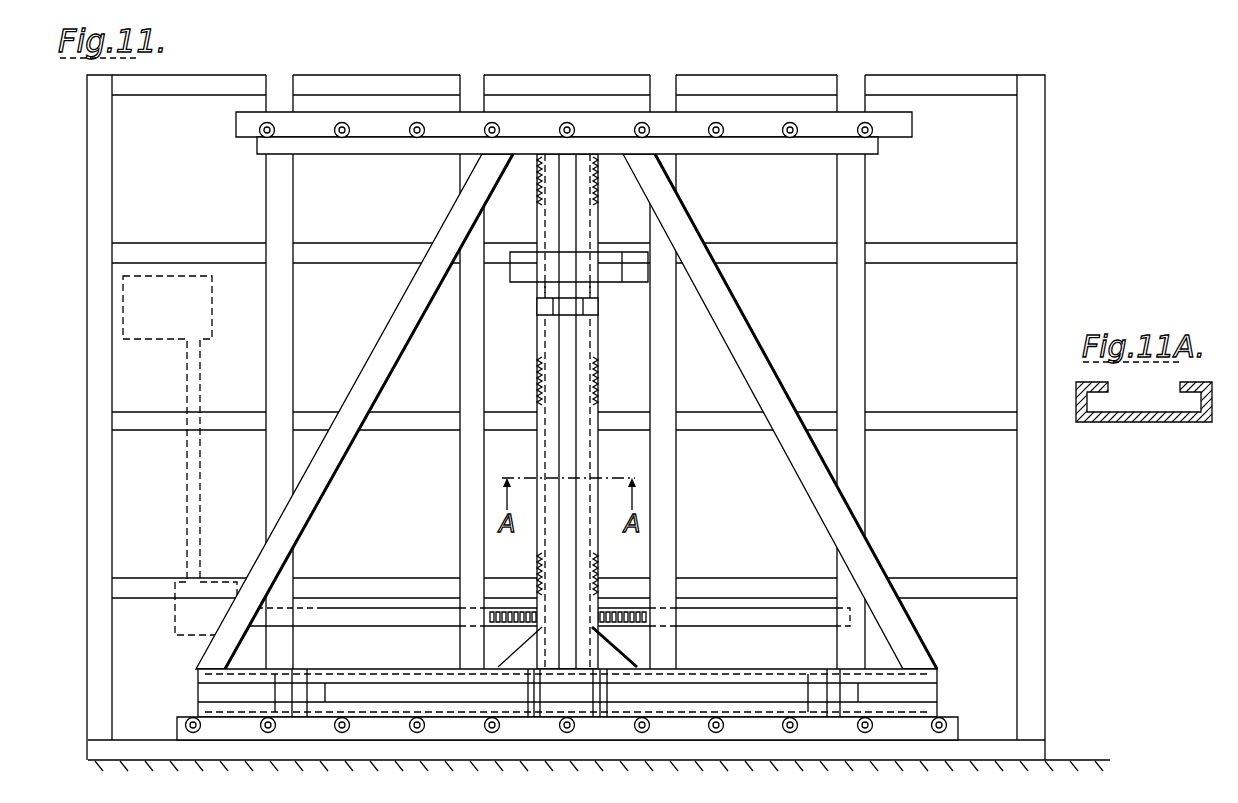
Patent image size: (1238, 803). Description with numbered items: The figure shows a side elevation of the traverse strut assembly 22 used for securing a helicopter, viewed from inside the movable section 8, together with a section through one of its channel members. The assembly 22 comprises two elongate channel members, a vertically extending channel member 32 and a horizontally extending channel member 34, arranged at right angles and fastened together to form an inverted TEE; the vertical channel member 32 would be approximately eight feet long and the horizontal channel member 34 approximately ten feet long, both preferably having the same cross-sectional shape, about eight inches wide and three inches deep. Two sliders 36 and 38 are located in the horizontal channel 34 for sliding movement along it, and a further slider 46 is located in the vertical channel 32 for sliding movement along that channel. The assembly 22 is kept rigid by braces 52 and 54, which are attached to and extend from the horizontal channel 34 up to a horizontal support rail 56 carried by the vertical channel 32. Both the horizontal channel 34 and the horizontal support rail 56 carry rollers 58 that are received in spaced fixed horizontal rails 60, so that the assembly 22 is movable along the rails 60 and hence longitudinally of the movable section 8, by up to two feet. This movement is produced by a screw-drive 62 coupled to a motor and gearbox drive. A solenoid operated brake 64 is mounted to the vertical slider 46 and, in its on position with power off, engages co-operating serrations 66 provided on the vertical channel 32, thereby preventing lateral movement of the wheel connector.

The movable section 8 is at (1033, 216).
The traverse strut assembly 22 is at (853, 508).
The vertical channel member 32 is at (583, 555).
The horizontal channel member 34 is at (715, 680).
The slider 36 is at (830, 690).
The slider 38 is at (300, 692).
The further slider 46 is at (593, 315).
The brace 52 is at (683, 231).
The brace 54 is at (405, 315).
The horizontal support rail 56 is at (860, 147).
The rollers 58 is at (720, 137).
The fixed horizontal rails 60 is at (898, 130).
The screw-drive 62 is at (522, 610).
The solenoid operated brake 64 is at (637, 272).
The serrations 66 is at (596, 385).